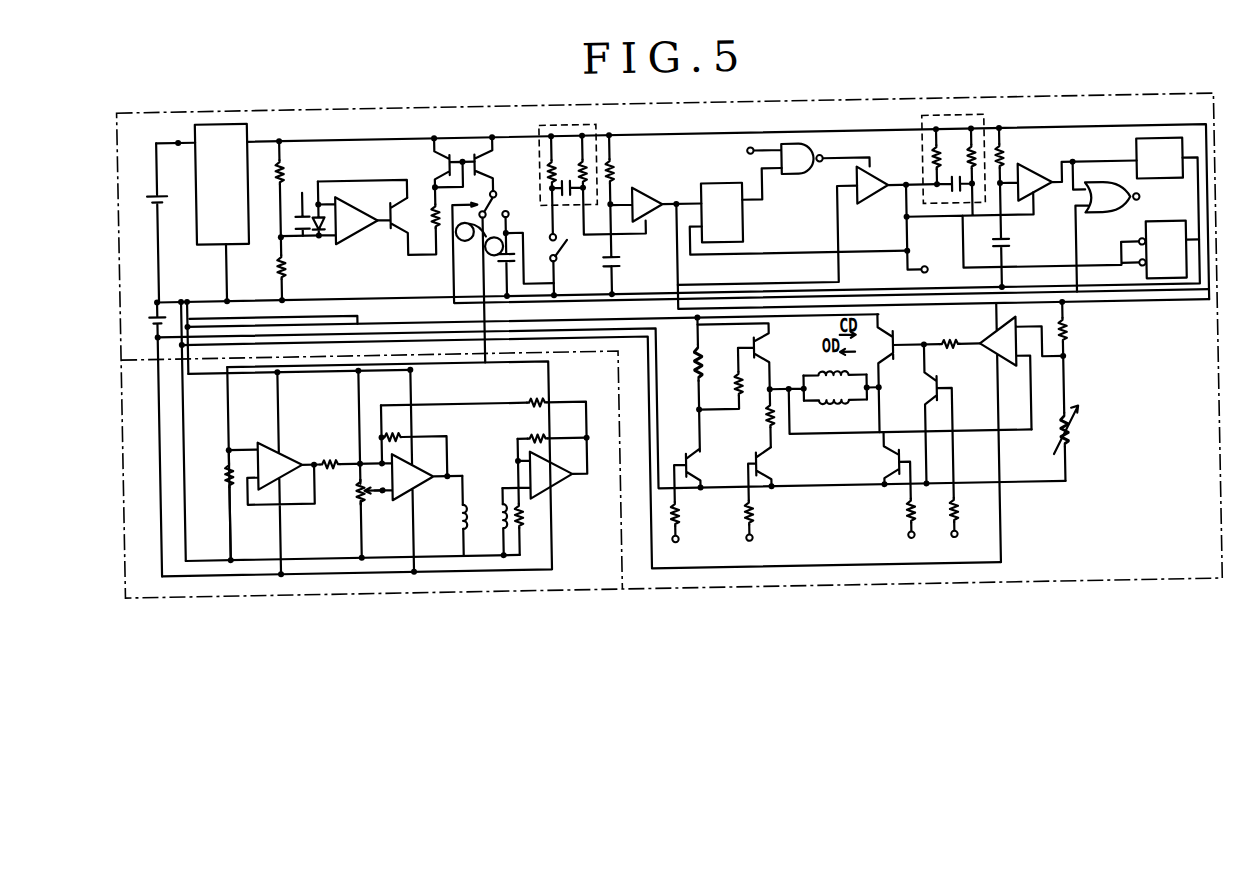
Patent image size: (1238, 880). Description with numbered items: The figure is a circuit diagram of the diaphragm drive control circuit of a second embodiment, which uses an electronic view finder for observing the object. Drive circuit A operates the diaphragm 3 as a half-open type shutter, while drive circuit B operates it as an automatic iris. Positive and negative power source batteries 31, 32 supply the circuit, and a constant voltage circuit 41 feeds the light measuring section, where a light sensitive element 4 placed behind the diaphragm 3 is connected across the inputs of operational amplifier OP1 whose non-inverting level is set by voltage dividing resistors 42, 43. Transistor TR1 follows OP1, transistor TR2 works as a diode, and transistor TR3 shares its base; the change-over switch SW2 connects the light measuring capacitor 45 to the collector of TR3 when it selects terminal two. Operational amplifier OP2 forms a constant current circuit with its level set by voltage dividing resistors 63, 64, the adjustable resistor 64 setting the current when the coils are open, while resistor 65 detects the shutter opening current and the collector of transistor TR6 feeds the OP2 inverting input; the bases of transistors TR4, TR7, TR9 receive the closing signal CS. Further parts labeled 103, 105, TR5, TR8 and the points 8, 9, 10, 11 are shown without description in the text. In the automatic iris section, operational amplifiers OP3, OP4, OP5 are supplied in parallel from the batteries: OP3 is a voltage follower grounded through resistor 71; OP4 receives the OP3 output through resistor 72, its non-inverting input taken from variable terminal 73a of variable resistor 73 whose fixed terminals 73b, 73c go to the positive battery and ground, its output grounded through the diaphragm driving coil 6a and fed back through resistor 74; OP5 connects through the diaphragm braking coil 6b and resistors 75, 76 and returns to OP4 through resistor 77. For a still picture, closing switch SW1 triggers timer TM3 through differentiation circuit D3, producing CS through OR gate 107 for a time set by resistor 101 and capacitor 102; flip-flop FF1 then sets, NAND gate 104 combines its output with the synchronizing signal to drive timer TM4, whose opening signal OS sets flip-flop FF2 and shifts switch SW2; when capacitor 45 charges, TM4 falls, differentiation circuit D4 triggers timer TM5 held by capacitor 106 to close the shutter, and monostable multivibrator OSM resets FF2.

The positive power source battery 31 is at (158, 192).
The negative power source battery 32 is at (157, 310).
The constant voltage circuit 41 is at (199, 128).
The voltage dividing resistor 42 is at (288, 166).
The voltage dividing resistor 43 is at (278, 270).
The diaphragm 3 is at (300, 216).
The light sensitive element 4 is at (322, 235).
The light measuring capacitor 45 is at (498, 258).
The resistor 101 is at (622, 175).
The capacitor 102 is at (622, 262).
The voltage detection input terminal 103 is at (750, 160).
The NAND gate 104 is at (800, 180).
The resistor 105 is at (1010, 165).
The capacitor 106 is at (1012, 250).
The OR gate 107 is at (1105, 224).
The voltage dividing resistor 63 is at (1070, 340).
The voltage dividing resistor 64 is at (1070, 442).
The resistor 65 is at (765, 420).
The resistor 71 is at (222, 466).
The resistor 72 is at (330, 452).
The variable resistor 73 is at (356, 492).
The variable terminal 73a is at (372, 489).
The fixed terminal 73b is at (356, 479).
The fixed terminal 73c is at (356, 500).
The resistor 74 is at (393, 428).
The resistor 75 is at (522, 516).
The resistor 76 is at (532, 432).
The resistor 77 is at (532, 396).
The diaphragm driving coil 6a is at (457, 516).
The diaphragm braking coil 6b is at (497, 512).
The coil terminal 8 is at (458, 504).
The coil terminal 9 is at (458, 546).
The coil terminal 10 is at (500, 500).
The coil terminal 11 is at (498, 546).
The transistor TR1 is at (406, 240).
The transistor TR2 is at (440, 160).
The transistor TR3 is at (492, 165).
The transistor TR4 is at (684, 452).
The transistor TR5 is at (752, 458).
The transistor TR6 is at (751, 345).
The transistor TR7 is at (925, 385).
The transistor TR8 is at (895, 341).
The transistor TR9 is at (890, 466).
The operational amplifier OP1 is at (358, 238).
The operational amplifier OP2 is at (1000, 362).
The operational amplifier OP3 is at (268, 440).
The operational amplifier OP4 is at (428, 467).
The operational amplifier OP5 is at (555, 491).
The timer TM3 is at (650, 190).
The timer TM4 is at (876, 200).
The timer TM5 is at (1040, 203).
The flip-flop FF1 is at (748, 238).
The flip-flop FF2 is at (1166, 231).
The monostable multivibrator OSM is at (1159, 158).
The switch SW1 is at (595, 265).
The change-over switch SW2 is at (498, 206).
The differentiation circuit D3 is at (560, 122).
The differentiation circuit D4 is at (935, 121).
The drive circuit A is at (1106, 112).
The drive circuit B is at (220, 590).